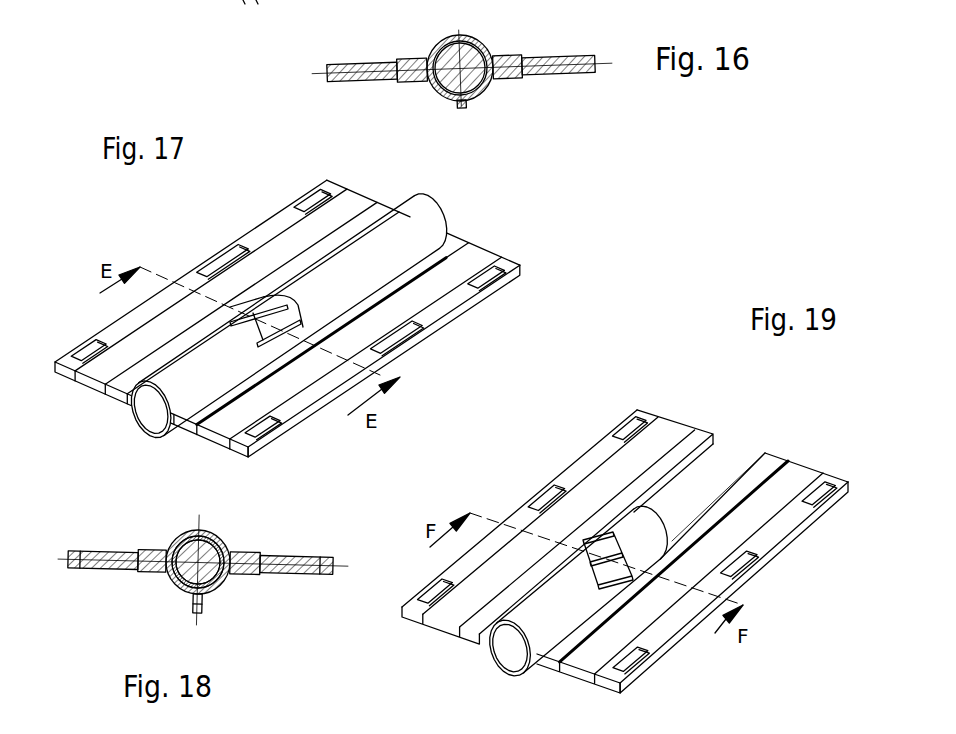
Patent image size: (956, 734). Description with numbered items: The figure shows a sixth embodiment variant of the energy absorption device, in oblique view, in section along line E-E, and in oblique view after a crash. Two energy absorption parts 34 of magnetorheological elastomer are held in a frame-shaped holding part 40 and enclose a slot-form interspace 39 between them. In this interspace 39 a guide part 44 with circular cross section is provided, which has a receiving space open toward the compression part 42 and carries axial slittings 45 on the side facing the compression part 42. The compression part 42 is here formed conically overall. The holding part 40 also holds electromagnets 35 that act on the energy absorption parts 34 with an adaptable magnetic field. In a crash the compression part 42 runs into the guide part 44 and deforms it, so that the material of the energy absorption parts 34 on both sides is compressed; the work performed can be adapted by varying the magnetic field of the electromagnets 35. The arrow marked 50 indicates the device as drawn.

In FIG. 17, the energy absorption part 34 is at (293, 270).
In FIG. 19, the energy absorption part 34 is at (695, 437).
In FIG. 16, the electromagnet 35 is at (461, 68).
In FIG. 17, the electromagnet 35 is at (352, 207).
In FIG. 19, the electromagnet 35 is at (625, 551).
In FIG. 19, the slot-form interspace 39 is at (760, 489).
In FIG. 17, the holding part 40 is at (248, 242).
In FIG. 19, the holding part 40 is at (627, 545).
In FIG. 17, the compression part 42 is at (433, 220).
In FIG. 19, the compression part 42 is at (734, 474).
In FIG. 17, the guide part 44 is at (212, 353).
In FIG. 19, the guide part 44 is at (528, 670).
In FIG. 17, the axial slittings 45 is at (247, 324).
In FIG. 19, the axial slittings 45 is at (608, 560).
In FIG. 17, the hinge assembly 50 is at (453, 190).